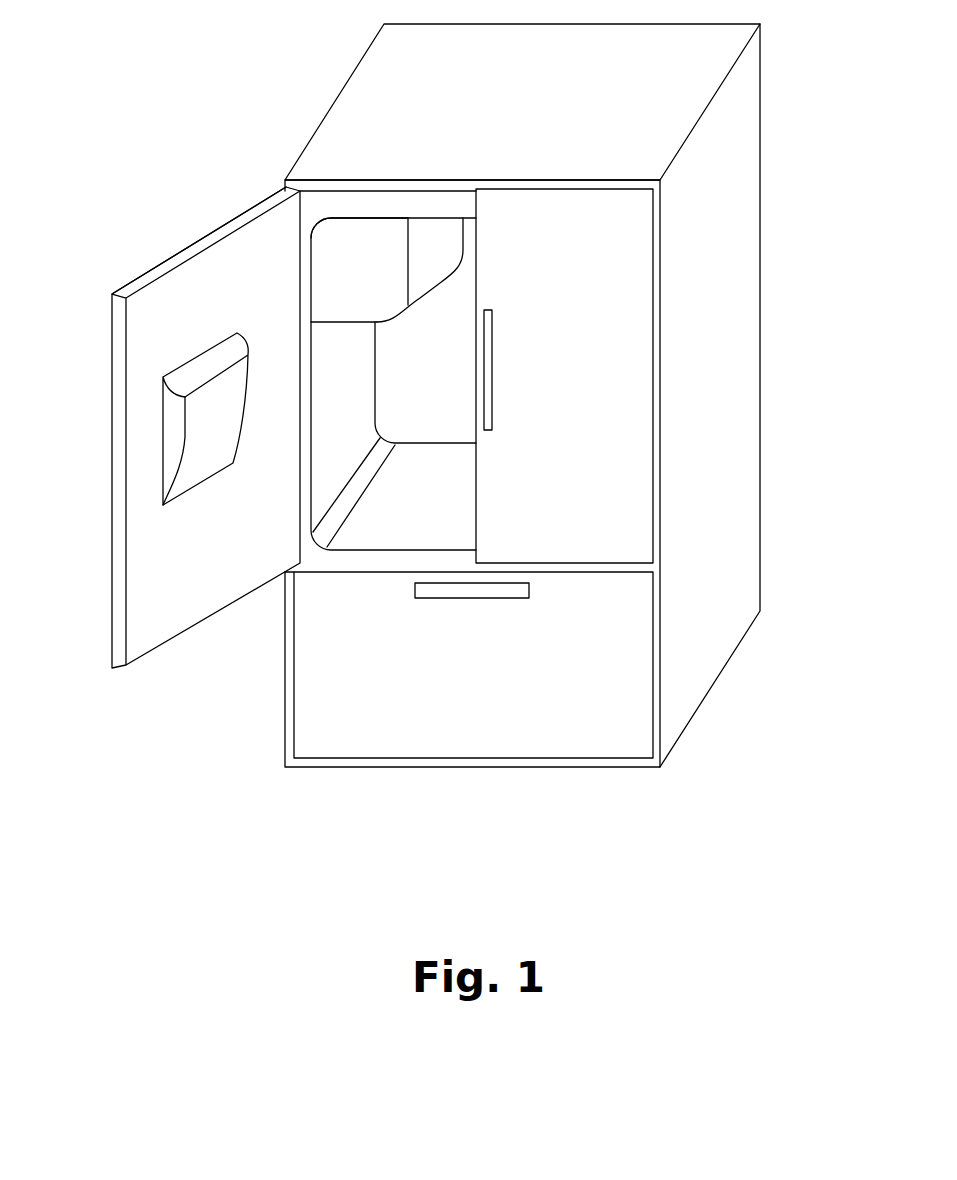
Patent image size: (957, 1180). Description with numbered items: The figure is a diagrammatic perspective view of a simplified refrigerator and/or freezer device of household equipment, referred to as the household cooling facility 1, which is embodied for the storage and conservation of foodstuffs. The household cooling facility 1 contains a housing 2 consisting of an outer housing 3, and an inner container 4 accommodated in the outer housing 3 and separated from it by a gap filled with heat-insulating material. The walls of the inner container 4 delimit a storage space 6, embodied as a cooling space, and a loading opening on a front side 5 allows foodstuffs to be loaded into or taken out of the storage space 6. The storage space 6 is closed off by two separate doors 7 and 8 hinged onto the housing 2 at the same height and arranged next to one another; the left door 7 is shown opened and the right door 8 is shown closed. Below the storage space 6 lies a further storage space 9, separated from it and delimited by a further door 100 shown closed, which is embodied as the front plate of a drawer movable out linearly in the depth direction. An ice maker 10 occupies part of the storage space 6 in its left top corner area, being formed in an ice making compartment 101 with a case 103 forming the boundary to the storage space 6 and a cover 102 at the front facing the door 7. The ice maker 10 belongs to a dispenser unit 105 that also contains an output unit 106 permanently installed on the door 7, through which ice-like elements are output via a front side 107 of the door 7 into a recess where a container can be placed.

The household cooling facility 1 is at (787, 82).
The housing 2 is at (766, 379).
The outer housing 3 is at (736, 476).
The inner container 4 is at (326, 349).
The front side 5 is at (323, 207).
The storage space 6 is at (442, 303).
The door 7 is at (181, 644).
The door 8 is at (614, 288).
The further storage space 9 is at (372, 674).
The ice maker 10 is at (377, 210).
The further door 100 is at (470, 704).
The ice making compartment 101 is at (407, 326).
The cover 102 is at (358, 296).
The case 103 is at (425, 308).
The dispenser unit 105 is at (236, 469).
The output unit 106 is at (152, 452).
The front side 107 is at (156, 258).